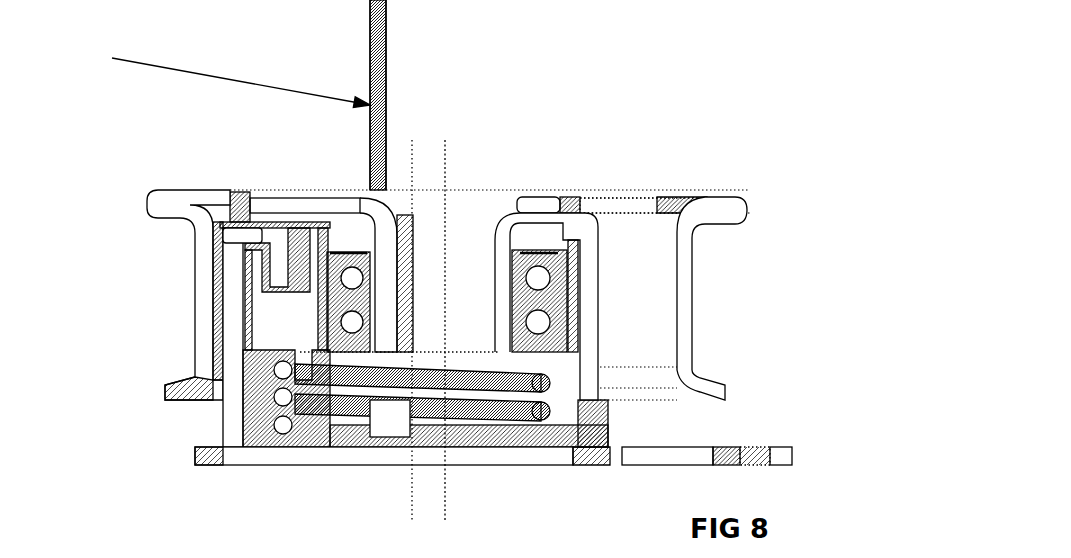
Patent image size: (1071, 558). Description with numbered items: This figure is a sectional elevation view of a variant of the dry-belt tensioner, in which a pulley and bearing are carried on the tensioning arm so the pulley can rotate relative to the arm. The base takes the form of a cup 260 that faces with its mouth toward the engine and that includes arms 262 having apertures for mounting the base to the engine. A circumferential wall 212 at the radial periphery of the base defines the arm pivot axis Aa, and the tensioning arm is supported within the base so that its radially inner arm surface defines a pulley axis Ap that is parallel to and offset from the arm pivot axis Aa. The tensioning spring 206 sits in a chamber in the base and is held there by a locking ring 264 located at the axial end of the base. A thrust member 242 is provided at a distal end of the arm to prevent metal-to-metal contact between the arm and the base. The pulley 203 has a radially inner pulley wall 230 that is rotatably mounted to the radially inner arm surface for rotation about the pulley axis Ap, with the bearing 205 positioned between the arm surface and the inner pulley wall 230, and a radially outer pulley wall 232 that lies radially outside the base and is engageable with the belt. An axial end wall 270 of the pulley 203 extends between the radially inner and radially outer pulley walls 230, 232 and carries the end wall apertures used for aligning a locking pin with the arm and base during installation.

The pulley 203 is at (735, 198).
The bearing 205 is at (271, 269).
The tensioning spring 206 is at (272, 394).
The circumferential wall 212 is at (236, 423).
The radially inner pulley wall 230 is at (392, 253).
The radially outer pulley wall 232 is at (200, 332).
The thrust member 242 is at (241, 236).
The cup 260 is at (211, 417).
The arms 262 is at (668, 452).
The locking ring 264 is at (246, 454).
The axial end wall 270 is at (324, 187).
The pulley axis Ap is at (445, 243).
The arm pivot axis Aa is at (413, 297).